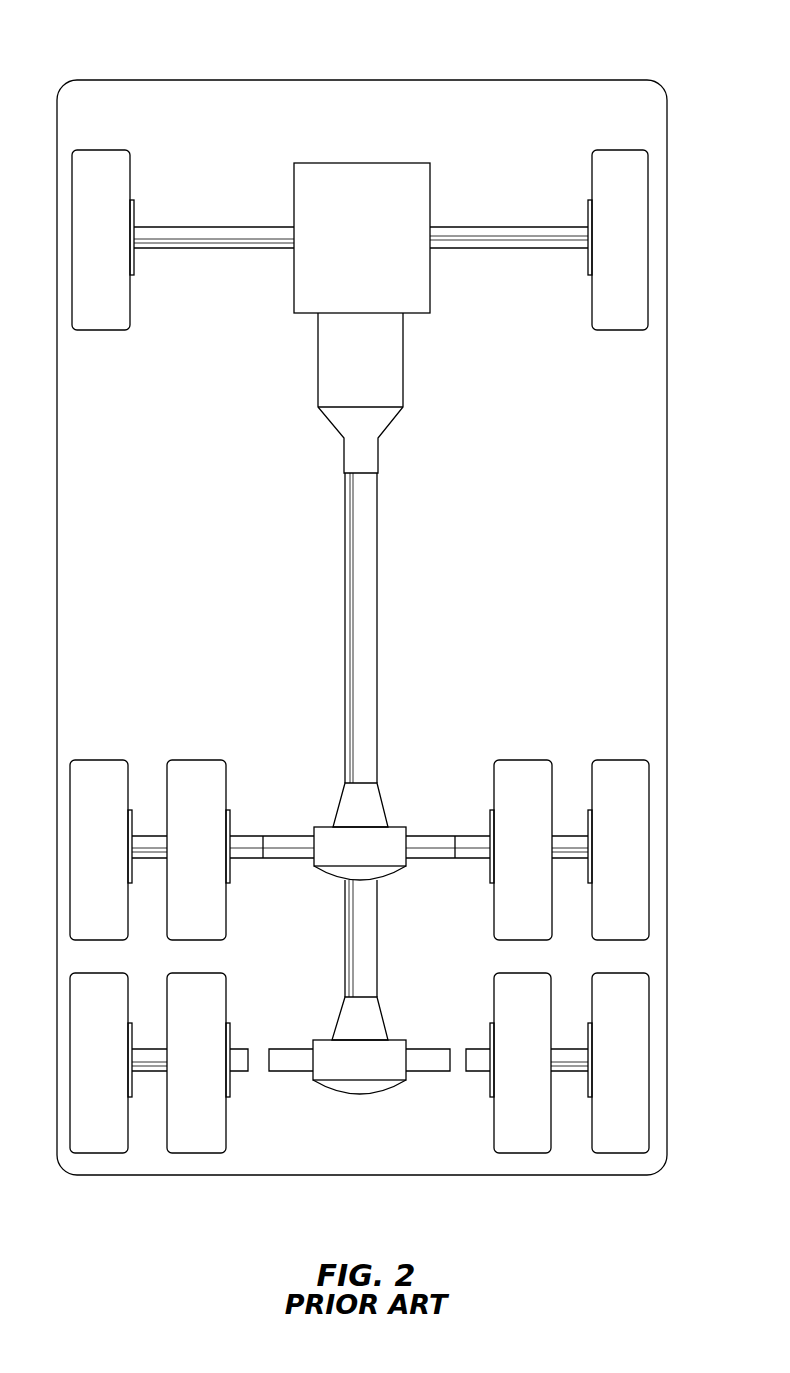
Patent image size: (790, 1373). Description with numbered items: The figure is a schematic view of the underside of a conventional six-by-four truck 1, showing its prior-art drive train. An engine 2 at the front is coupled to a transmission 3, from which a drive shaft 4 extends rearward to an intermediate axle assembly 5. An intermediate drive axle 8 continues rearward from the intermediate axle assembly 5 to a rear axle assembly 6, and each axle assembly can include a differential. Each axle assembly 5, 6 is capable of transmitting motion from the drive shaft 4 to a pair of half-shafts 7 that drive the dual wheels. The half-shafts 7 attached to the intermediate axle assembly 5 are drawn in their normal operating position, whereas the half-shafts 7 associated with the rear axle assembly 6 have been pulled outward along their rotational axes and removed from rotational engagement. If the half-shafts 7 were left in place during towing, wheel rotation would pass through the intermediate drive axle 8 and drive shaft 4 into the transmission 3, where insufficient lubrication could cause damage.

The truck 1 is at (624, 56).
The engine 2 is at (362, 238).
The transmission 3 is at (360, 393).
The drive shaft 4 is at (363, 557).
The intermediate axle assembly 5 is at (366, 820).
The rear axle assembly 6 is at (370, 1016).
The half-shafts 7 is at (147, 845).
The intermediate drive axle 8 is at (367, 950).